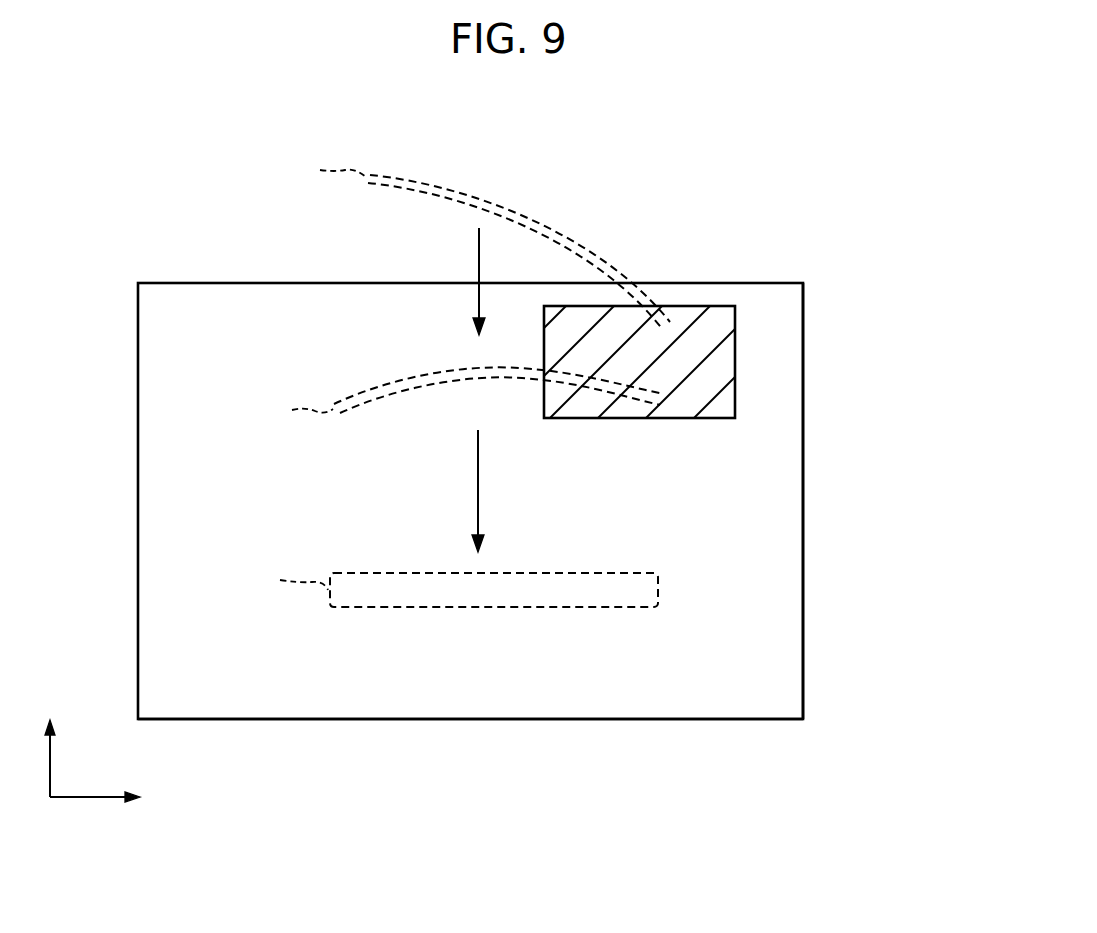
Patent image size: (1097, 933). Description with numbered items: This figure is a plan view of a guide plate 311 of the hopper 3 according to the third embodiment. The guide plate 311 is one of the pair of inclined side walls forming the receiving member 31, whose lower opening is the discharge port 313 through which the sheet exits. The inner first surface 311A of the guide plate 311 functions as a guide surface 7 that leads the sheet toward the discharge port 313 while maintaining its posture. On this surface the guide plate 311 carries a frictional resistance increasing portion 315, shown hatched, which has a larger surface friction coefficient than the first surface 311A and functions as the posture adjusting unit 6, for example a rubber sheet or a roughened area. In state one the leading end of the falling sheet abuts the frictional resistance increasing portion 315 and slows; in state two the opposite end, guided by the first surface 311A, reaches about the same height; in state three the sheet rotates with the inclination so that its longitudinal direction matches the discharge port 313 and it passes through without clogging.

The hopper 3 is at (903, 138).
The receiving member 31 is at (832, 268).
The guide plate 311 is at (814, 438).
The first surface 311A is at (862, 501).
The guide surface 7 is at (790, 545).
The discharge port 313 is at (744, 719).
The frictional resistance increasing portion 315 is at (728, 362).
The posture adjusting unit 6 is at (735, 355).